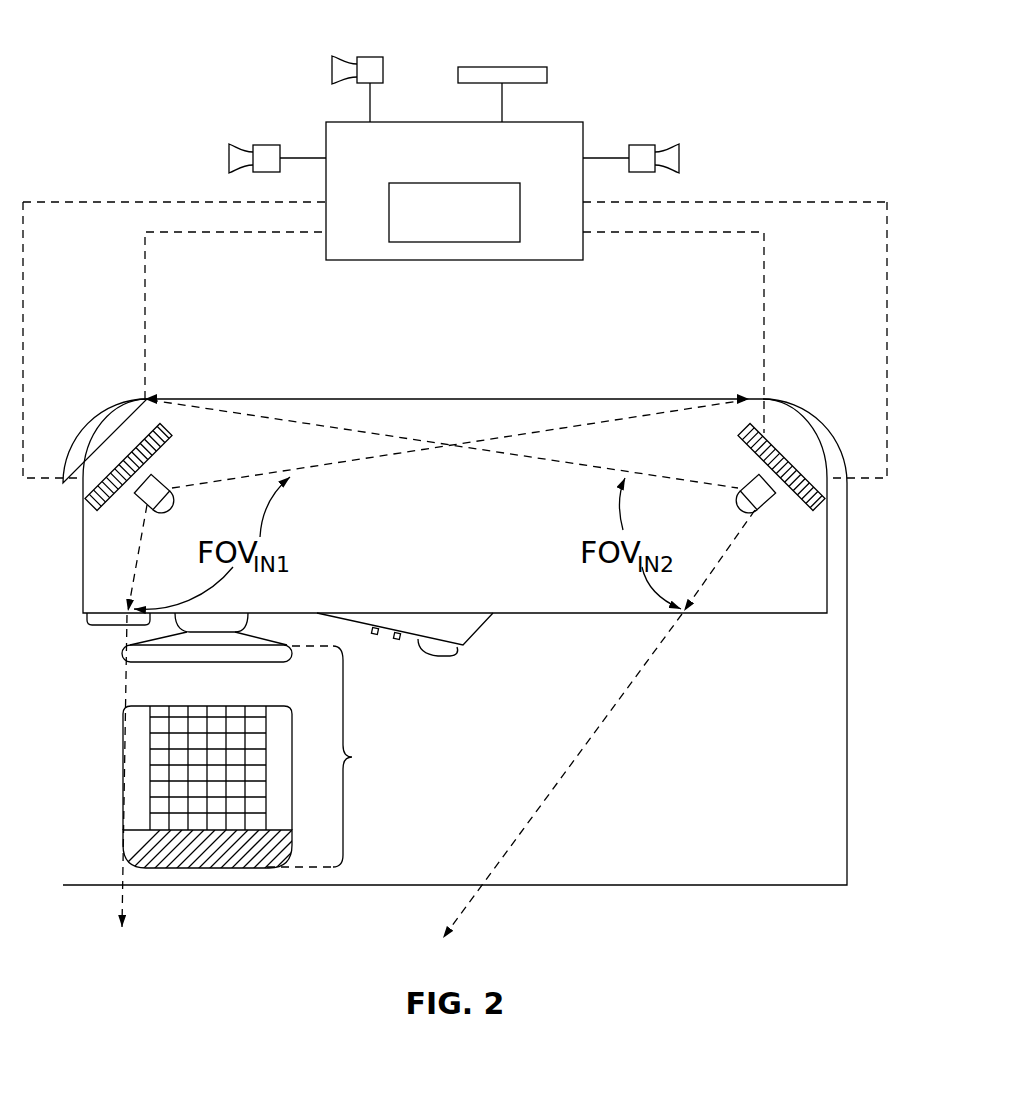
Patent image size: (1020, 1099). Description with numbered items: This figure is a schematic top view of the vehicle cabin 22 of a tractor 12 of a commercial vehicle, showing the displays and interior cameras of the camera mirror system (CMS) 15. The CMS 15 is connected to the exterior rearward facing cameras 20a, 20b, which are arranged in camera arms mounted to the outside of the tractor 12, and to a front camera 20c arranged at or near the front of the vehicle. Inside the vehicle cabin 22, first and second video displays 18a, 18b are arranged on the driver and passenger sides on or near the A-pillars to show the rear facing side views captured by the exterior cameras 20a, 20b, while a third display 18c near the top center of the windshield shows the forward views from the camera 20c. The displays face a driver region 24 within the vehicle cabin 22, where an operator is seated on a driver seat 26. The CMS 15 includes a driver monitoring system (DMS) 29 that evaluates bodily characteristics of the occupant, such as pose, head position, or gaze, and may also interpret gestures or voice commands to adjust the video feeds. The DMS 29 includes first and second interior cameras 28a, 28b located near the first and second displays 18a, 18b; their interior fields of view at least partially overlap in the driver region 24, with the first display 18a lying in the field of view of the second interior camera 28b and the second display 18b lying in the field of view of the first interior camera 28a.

The tractor 12 is at (600, 366).
The camera mirror system (CMS) 15 is at (584, 140).
The first video display 18a is at (128, 452).
The second video display 18b is at (781, 452).
The third display 18c is at (500, 67).
The rearward facing camera 20a is at (268, 145).
The rearward facing camera 20b is at (641, 145).
The front camera 20c is at (370, 56).
The vehicle cabin 22 is at (734, 761).
The driver region 24 is at (255, 746).
The driver seat 26 is at (278, 735).
The first interior camera 28a is at (179, 465).
The second interior camera 28b is at (742, 477).
The driver monitoring system (DMS) 29 is at (455, 242).